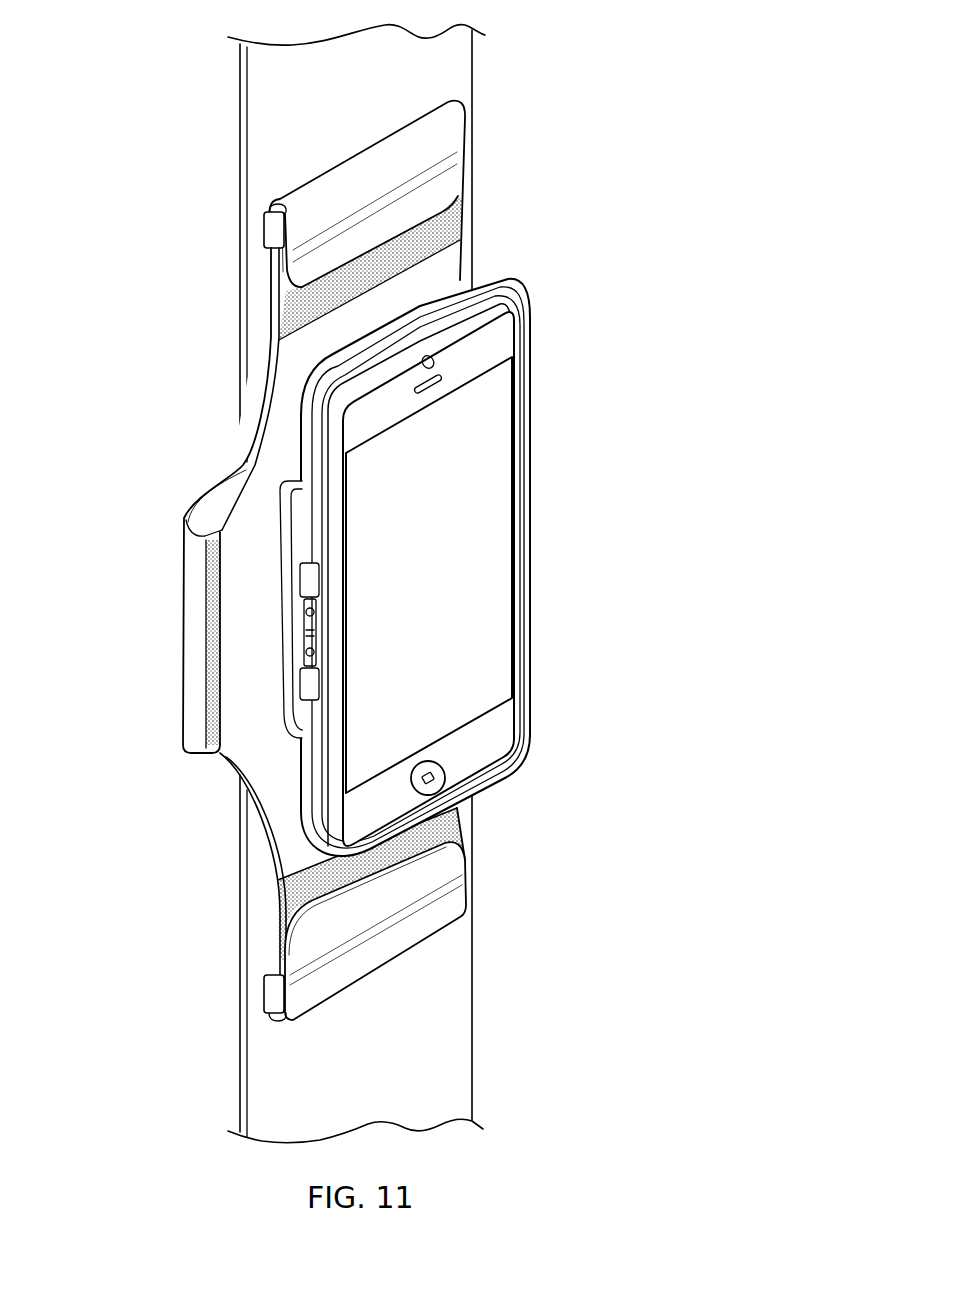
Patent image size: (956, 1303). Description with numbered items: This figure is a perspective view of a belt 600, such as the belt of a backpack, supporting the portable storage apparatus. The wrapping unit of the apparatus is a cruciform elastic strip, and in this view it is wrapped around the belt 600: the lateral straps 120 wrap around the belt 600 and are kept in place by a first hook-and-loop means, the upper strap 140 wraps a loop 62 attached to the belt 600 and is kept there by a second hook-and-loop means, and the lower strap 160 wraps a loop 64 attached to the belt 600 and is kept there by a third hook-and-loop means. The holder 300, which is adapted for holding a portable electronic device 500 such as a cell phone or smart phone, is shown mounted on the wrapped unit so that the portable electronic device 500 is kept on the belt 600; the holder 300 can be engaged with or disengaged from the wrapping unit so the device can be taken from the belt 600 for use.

The belt 600 is at (452, 72).
The upper strap 140 is at (442, 189).
The loop 62 is at (275, 232).
The lateral straps 120 is at (173, 595).
The lower strap 160 is at (450, 907).
The loop 64 is at (275, 998).
The holder 300 is at (534, 302).
The portable electronic device 500 is at (497, 727).